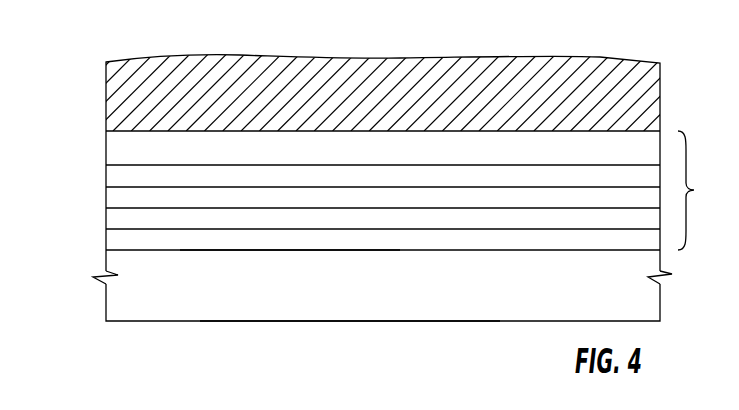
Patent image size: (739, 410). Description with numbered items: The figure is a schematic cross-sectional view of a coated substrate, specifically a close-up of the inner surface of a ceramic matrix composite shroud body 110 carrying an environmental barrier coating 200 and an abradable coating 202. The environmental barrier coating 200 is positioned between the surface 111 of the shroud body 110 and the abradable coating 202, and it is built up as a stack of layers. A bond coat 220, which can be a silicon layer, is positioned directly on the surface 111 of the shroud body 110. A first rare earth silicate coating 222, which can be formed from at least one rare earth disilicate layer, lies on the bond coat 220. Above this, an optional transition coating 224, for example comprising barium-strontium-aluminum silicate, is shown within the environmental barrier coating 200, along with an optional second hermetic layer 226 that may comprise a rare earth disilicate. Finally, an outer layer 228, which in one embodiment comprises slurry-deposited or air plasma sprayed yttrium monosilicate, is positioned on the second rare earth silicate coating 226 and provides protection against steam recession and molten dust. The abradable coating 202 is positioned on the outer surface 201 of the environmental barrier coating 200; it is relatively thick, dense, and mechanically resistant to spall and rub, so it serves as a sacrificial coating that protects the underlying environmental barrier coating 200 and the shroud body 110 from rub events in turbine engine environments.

The shroud body 110 is at (393, 78).
The surface 111 is at (293, 139).
The environmental barrier coating 200 is at (704, 190).
The bond coat 220 is at (115, 149).
The first rare earth silicate coating 222 is at (115, 178).
The transition coating 224 is at (117, 193).
The second hermetic layer 226 is at (117, 220).
The outer layer 228 is at (115, 242).
The outer surface 201 is at (190, 262).
The abradable coating 202 is at (365, 300).